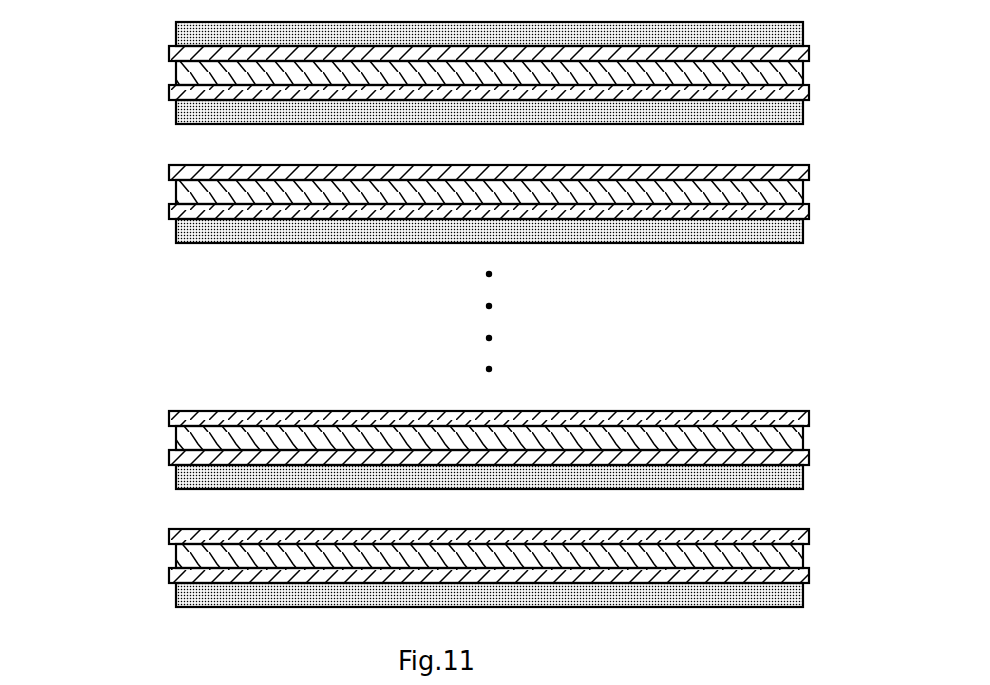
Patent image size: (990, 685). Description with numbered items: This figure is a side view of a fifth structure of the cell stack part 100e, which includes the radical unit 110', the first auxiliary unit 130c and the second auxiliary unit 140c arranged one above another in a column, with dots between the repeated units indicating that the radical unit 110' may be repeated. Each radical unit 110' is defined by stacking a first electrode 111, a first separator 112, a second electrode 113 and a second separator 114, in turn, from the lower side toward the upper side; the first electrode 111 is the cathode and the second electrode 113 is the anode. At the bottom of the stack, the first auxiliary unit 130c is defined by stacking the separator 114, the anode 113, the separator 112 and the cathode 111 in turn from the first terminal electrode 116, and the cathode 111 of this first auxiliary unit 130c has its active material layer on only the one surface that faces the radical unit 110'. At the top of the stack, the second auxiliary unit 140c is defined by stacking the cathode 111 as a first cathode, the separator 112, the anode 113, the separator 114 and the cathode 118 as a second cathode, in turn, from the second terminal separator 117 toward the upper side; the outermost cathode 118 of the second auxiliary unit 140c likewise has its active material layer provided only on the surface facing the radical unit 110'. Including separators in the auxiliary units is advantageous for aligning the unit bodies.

The first electrode 111 is at (182, 114).
The first separator 112 is at (180, 92).
The second electrode 113 is at (182, 71).
The second separator 114 is at (180, 53).
The first terminal electrode 116 is at (440, 509).
The second terminal separator 117 is at (440, 145).
The cathode (second cathode) 118 is at (178, 30).
The radical unit 110' is at (412, 327).
The first auxiliary unit 130c is at (83, 535).
The second auxiliary unit 140c is at (83, 30).
The cell stack part 100e is at (820, 26).